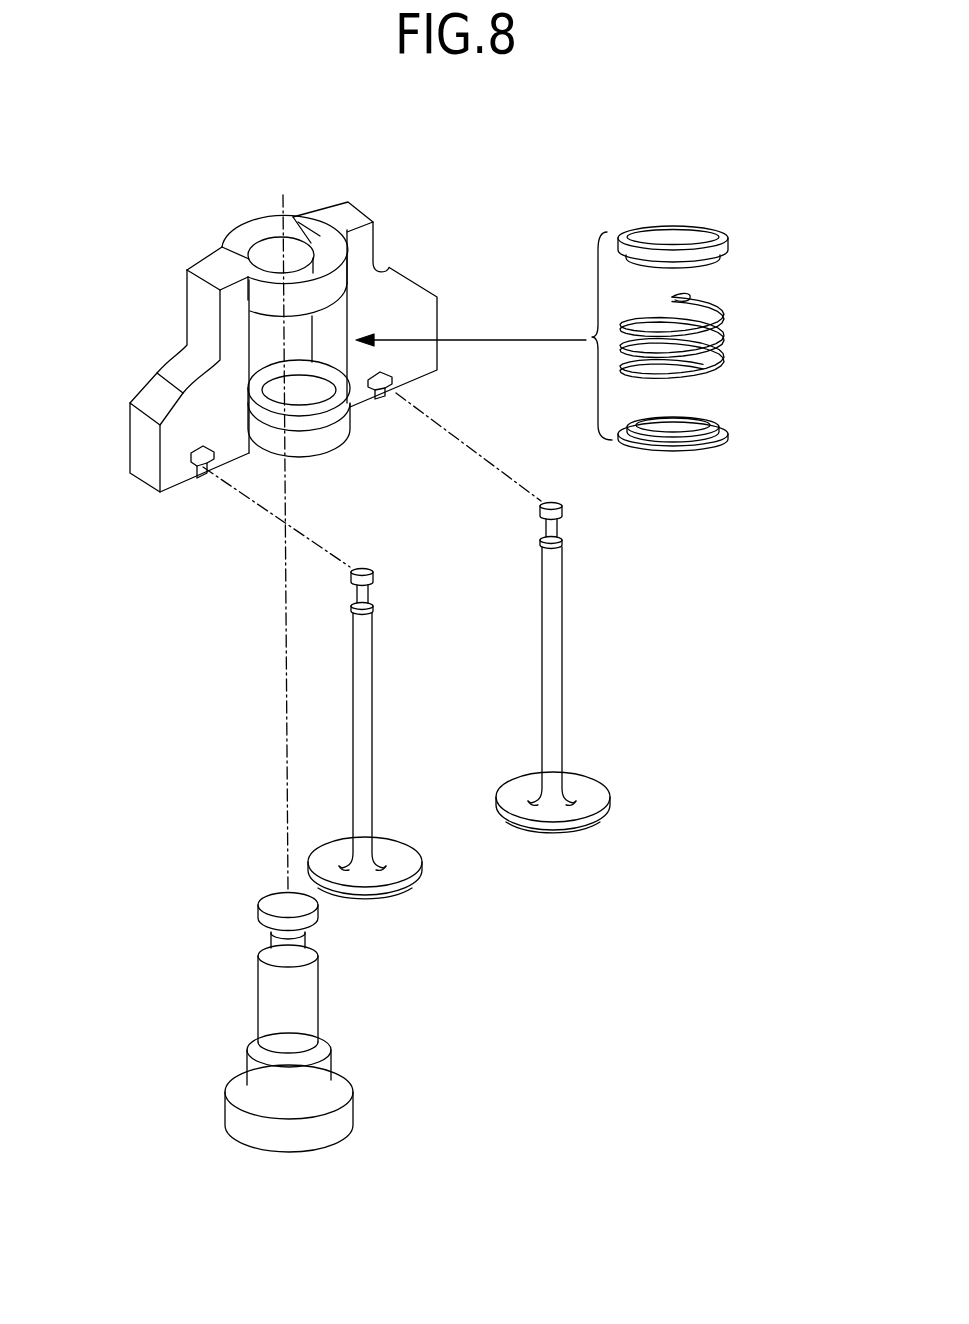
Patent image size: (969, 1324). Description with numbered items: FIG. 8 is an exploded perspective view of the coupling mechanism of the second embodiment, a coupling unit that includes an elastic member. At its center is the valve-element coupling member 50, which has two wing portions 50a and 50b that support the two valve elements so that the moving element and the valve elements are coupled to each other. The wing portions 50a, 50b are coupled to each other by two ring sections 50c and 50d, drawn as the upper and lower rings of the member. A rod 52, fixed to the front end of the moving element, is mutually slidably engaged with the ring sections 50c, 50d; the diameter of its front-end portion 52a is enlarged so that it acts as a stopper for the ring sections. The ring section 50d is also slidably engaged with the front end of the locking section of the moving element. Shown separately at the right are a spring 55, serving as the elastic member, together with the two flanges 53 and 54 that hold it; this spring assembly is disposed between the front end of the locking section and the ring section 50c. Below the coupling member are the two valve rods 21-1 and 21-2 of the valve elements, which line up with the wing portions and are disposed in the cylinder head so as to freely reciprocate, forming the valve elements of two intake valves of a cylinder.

The valve-element coupling member 50 is at (429, 169).
The wing portion 50a is at (422, 297).
The wing portion 50b is at (143, 460).
The ring section 50c is at (341, 428).
The ring section 50d is at (348, 273).
The flange 53 is at (729, 431).
The flange 54 is at (729, 236).
The spring 55 is at (726, 349).
The valve rod 21-1 is at (557, 618).
The valve rod 21-2 is at (367, 675).
The rod 52 is at (355, 1009).
The front-end portion 52a is at (347, 1118).